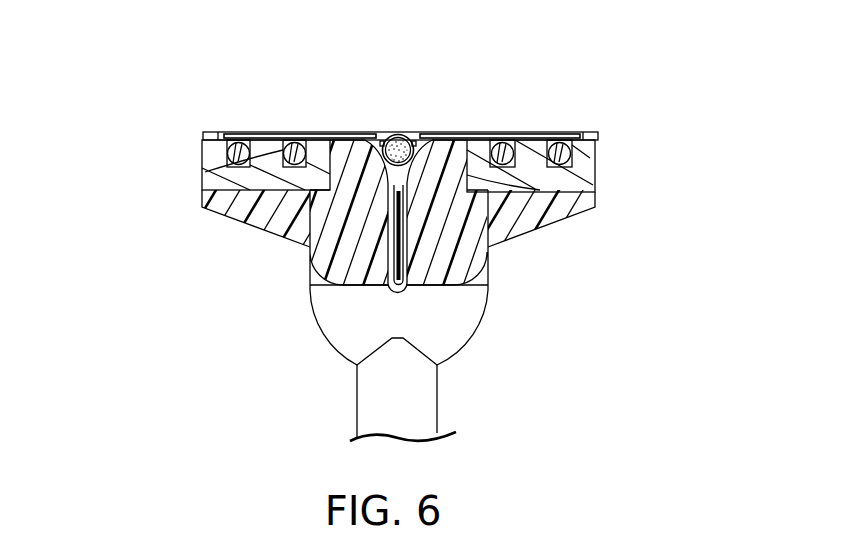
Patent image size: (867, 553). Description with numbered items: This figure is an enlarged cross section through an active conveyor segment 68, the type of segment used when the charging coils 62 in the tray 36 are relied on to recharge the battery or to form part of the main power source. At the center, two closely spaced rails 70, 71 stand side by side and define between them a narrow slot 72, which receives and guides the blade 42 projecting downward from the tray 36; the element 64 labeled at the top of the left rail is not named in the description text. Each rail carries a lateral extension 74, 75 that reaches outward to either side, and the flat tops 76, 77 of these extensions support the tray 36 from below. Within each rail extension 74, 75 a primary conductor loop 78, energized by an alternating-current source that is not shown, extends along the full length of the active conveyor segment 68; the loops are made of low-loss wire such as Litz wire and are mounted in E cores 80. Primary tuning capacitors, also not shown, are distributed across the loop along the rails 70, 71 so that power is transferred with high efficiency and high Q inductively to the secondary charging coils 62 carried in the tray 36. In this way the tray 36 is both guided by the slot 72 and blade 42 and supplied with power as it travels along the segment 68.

The active conveyor segment 68 is at (146, 87).
The tray 36 is at (213, 132).
The flat top 77 is at (222, 133).
The seat 64 is at (333, 150).
The rail 71 is at (346, 155).
The rail 70 is at (441, 152).
The flat top 76 is at (482, 138).
The charging coil 62 is at (565, 135).
The E core 80 is at (210, 184).
The primary conductor loop 78 is at (225, 166).
The lateral extension 75 is at (243, 212).
The lateral extension 74 is at (563, 210).
The blade 42 is at (401, 292).
The slot 72 is at (402, 290).